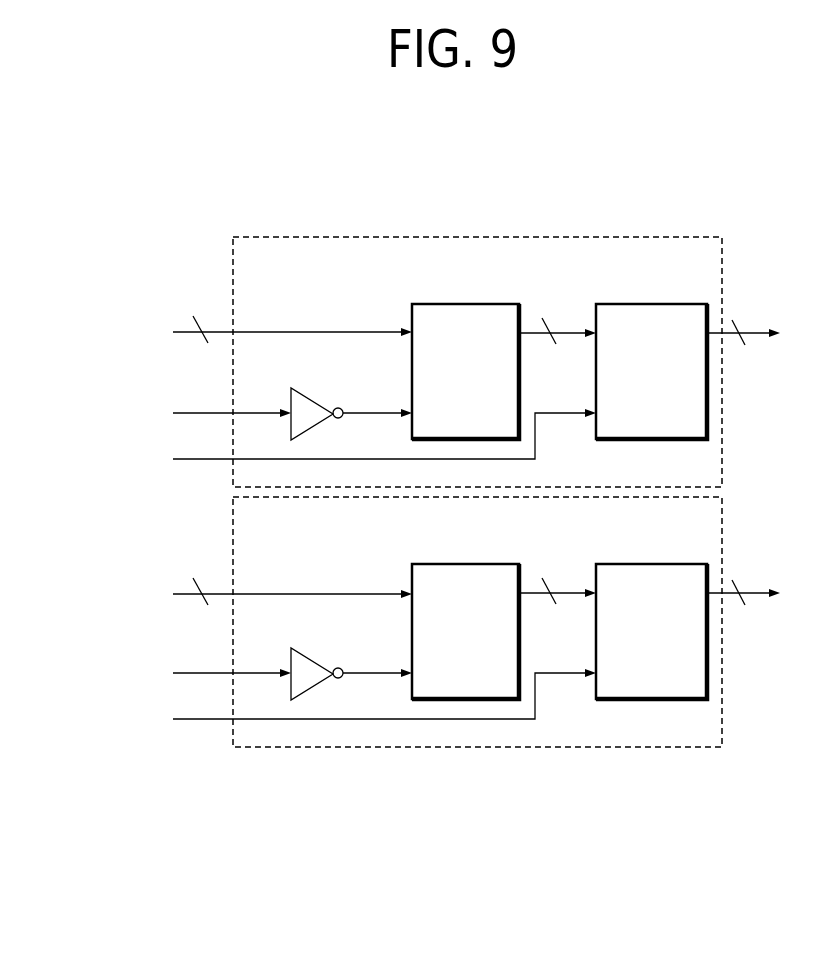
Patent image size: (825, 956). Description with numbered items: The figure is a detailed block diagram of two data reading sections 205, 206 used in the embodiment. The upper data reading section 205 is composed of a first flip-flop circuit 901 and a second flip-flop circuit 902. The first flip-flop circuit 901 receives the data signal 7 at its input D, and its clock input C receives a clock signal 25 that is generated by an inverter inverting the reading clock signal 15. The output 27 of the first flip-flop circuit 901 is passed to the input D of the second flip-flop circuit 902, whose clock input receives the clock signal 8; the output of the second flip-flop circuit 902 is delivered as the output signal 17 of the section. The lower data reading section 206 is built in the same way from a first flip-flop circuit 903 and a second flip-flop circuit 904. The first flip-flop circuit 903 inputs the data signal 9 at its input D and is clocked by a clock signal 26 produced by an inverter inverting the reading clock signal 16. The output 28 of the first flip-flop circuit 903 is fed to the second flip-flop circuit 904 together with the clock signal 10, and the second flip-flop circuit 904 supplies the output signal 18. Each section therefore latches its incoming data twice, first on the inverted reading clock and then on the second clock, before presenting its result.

The data reading section 205 is at (303, 237).
The data reading section 206 is at (308, 748).
The first flip-flop circuit 901 is at (488, 303).
The second flip-flop circuit 902 is at (617, 305).
The first flip-flop circuit 903 is at (488, 563).
The second flip-flop circuit 904 is at (617, 565).
The data signal 7 is at (230, 332).
The reading clock signal 15 is at (190, 414).
The clock signal 8 is at (322, 444).
The data signal 9 is at (240, 593).
The reading clock signal 16 is at (189, 674).
The clock signal 10 is at (315, 705).
The clock signal 25 is at (361, 411).
The clock signal 26 is at (361, 671).
The output of the first flip-flop circuit 27 is at (540, 338).
The output of the first flip-flop circuit 28 is at (540, 598).
The output of the second flip-flop circuit 17 is at (762, 337).
The output of the second flip-flop circuit 18 is at (762, 597).